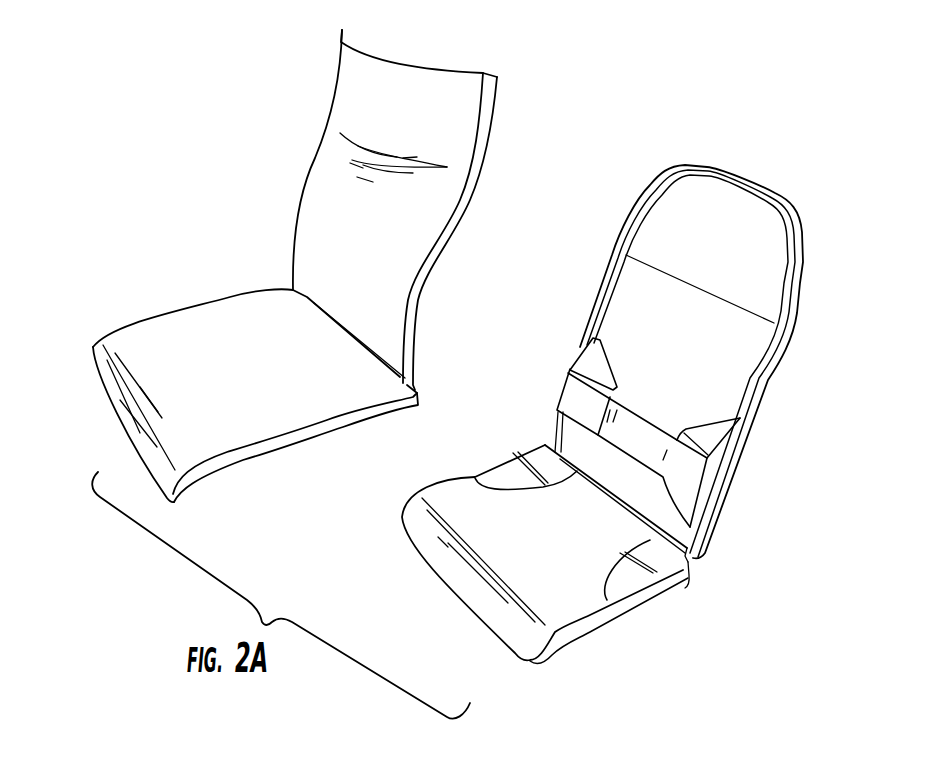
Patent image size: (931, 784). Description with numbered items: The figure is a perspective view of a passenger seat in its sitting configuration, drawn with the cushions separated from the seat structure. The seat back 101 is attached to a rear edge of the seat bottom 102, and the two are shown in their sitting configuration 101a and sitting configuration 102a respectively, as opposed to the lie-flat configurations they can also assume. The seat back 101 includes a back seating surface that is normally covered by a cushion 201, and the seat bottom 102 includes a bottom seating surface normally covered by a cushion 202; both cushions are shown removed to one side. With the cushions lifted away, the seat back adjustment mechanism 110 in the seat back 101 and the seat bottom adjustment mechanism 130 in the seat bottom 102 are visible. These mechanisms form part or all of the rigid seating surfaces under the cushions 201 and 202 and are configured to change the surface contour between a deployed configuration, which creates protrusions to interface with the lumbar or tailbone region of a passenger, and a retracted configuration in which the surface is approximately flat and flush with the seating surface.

The seat back 101 is at (707, 376).
The sitting configuration of the seat back 101a is at (795, 448).
The seat bottom 102 is at (497, 514).
The sitting configuration of the seat bottom 102a is at (493, 563).
The seat back adjustment mechanism 110 is at (566, 357).
The seat bottom adjustment mechanism 130 is at (510, 443).
The cushion 201 is at (325, 164).
The cushion 202 is at (202, 340).